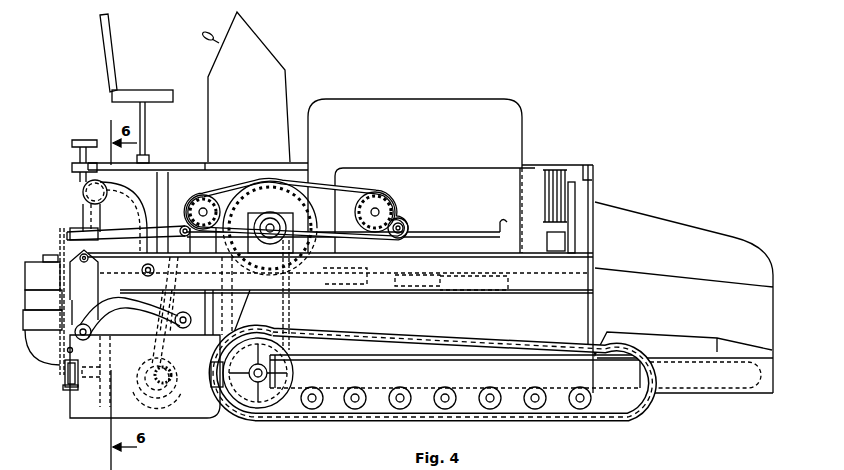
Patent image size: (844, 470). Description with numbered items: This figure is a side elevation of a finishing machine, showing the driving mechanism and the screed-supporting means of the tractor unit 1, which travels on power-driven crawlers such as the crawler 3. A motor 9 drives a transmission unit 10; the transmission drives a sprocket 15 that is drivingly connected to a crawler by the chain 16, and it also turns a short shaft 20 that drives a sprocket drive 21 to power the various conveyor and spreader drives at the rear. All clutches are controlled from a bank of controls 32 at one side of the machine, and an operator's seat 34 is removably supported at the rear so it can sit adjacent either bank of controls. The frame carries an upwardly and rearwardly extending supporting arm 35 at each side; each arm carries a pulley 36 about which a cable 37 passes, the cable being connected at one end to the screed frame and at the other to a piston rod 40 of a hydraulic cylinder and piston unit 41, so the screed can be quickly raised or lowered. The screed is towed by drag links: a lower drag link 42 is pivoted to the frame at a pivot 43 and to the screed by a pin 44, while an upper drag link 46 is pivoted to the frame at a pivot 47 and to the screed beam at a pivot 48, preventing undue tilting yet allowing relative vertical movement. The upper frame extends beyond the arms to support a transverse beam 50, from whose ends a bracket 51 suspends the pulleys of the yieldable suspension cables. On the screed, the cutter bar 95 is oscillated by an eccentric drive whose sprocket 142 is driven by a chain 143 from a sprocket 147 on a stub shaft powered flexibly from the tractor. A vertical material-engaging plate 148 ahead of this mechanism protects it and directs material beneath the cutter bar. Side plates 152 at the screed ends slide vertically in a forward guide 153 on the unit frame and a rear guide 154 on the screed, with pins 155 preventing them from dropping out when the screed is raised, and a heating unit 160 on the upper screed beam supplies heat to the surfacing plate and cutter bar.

The tractor unit 1 is at (597, 176).
The power-driven crawler 3 is at (565, 418).
The motor 9 is at (447, 110).
The transmission unit 10 is at (473, 178).
The sprocket 15 is at (262, 252).
The chain 16 is at (290, 313).
The short shaft 20 is at (405, 221).
The sprocket drive 21 is at (348, 200).
The bank of controls 32 is at (216, 48).
The operator's seat 34 is at (147, 96).
The supporting arm 35 is at (135, 205).
The pulley 36 is at (83, 190).
The cable 37 is at (84, 214).
The piston rod 40 is at (392, 280).
The hydraulic cylinder and piston unit 41 is at (478, 286).
The lower drag link 42 is at (130, 300).
The pivot 43 is at (165, 363).
The pin 44 is at (85, 316).
The upper drag link 46 is at (135, 232).
The pivot 47 is at (190, 218).
The pivot 48 is at (84, 275).
The transverse beam 50 is at (72, 152).
The bracket 51 is at (72, 170).
The cutter bar 95 is at (100, 418).
The sprocket 142 is at (65, 377).
The chain 143 is at (62, 297).
The sprocket 147 is at (60, 234).
The material-engaging plate 148 is at (140, 365).
The side plate 152 is at (173, 407).
The guide 153 is at (212, 386).
The guide 154 is at (67, 390).
The pin 155 is at (67, 351).
The heating unit 160 is at (43, 260).